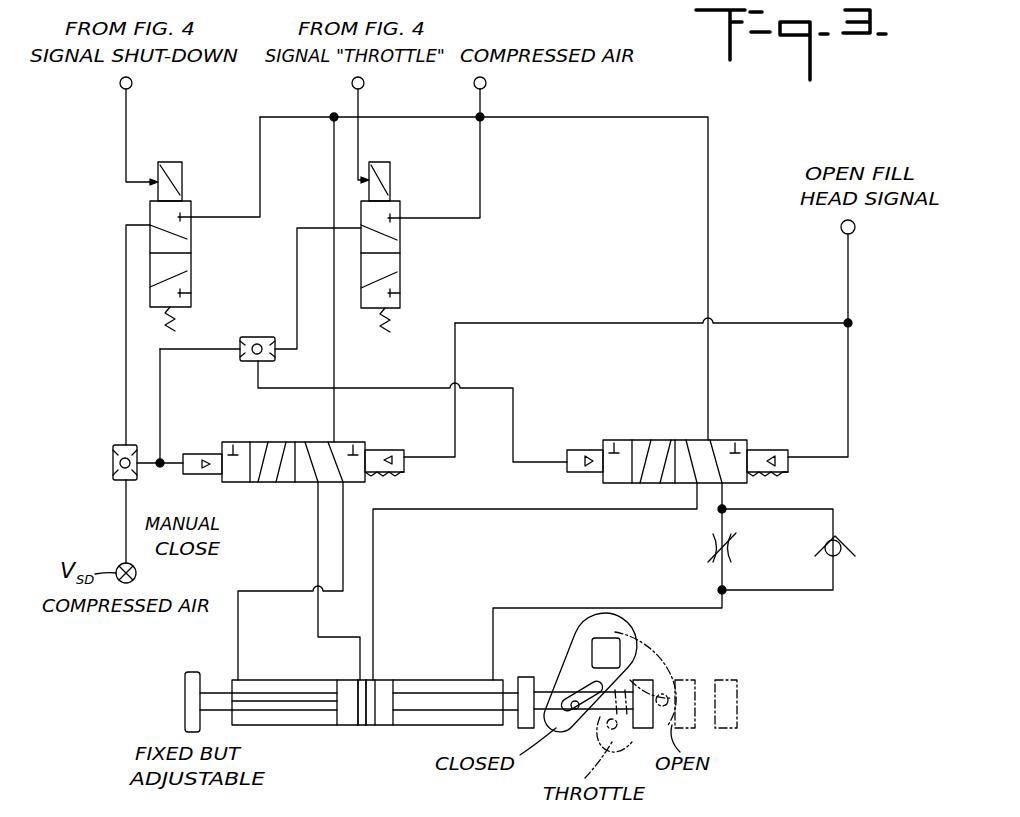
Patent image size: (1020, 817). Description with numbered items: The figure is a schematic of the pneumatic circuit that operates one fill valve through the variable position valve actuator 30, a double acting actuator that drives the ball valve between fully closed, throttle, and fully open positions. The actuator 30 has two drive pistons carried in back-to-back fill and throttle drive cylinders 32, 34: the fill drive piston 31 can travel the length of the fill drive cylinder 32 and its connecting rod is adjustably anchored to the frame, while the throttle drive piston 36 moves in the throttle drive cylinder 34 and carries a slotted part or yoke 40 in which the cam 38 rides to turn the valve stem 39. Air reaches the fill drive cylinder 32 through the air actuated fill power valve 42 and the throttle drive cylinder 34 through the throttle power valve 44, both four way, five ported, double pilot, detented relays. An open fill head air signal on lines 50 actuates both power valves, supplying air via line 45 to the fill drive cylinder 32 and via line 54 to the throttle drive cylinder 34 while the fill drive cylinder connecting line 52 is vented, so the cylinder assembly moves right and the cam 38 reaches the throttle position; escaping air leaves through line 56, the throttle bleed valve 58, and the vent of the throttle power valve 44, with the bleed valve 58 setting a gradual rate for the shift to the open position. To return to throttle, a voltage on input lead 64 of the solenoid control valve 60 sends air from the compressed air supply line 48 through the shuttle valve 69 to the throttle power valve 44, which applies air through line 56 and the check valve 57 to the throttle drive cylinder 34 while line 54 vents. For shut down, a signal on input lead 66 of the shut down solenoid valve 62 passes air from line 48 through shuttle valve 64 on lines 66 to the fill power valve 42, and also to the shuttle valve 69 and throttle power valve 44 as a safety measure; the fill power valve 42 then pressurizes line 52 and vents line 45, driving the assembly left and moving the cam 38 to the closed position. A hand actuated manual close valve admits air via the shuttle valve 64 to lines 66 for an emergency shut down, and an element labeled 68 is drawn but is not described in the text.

The variable position valve actuator 30 is at (371, 734).
The fill drive piston 31 is at (300, 700).
The fill drive cylinder 32 is at (308, 680).
The throttle drive cylinder 34 is at (425, 680).
The throttle drive piston 36 is at (463, 700).
The cam 38 is at (580, 660).
The valve stem 39 is at (612, 645).
The slotted part or yoke 40 is at (548, 683).
The fill power valve 42 is at (292, 438).
The throttle power valve 44 is at (690, 436).
The line 45 is at (316, 518).
The compressed air supply line 48 is at (482, 120).
The lines 50 is at (846, 357).
The fill drive cylinder connecting line 52 is at (341, 556).
The line 54 is at (540, 511).
The line 56 is at (607, 608).
The check valve 57 is at (852, 548).
The throttle bleed valve 58 is at (710, 548).
The solenoid control valve 60 is at (413, 283).
The shut down solenoid valve 62 is at (247, 247).
The input lead / shuttle valve 64 is at (352, 88).
The input lead / lines 66 is at (118, 88).
The air line 68 is at (297, 296).
The shuttle valve 69 is at (245, 362).